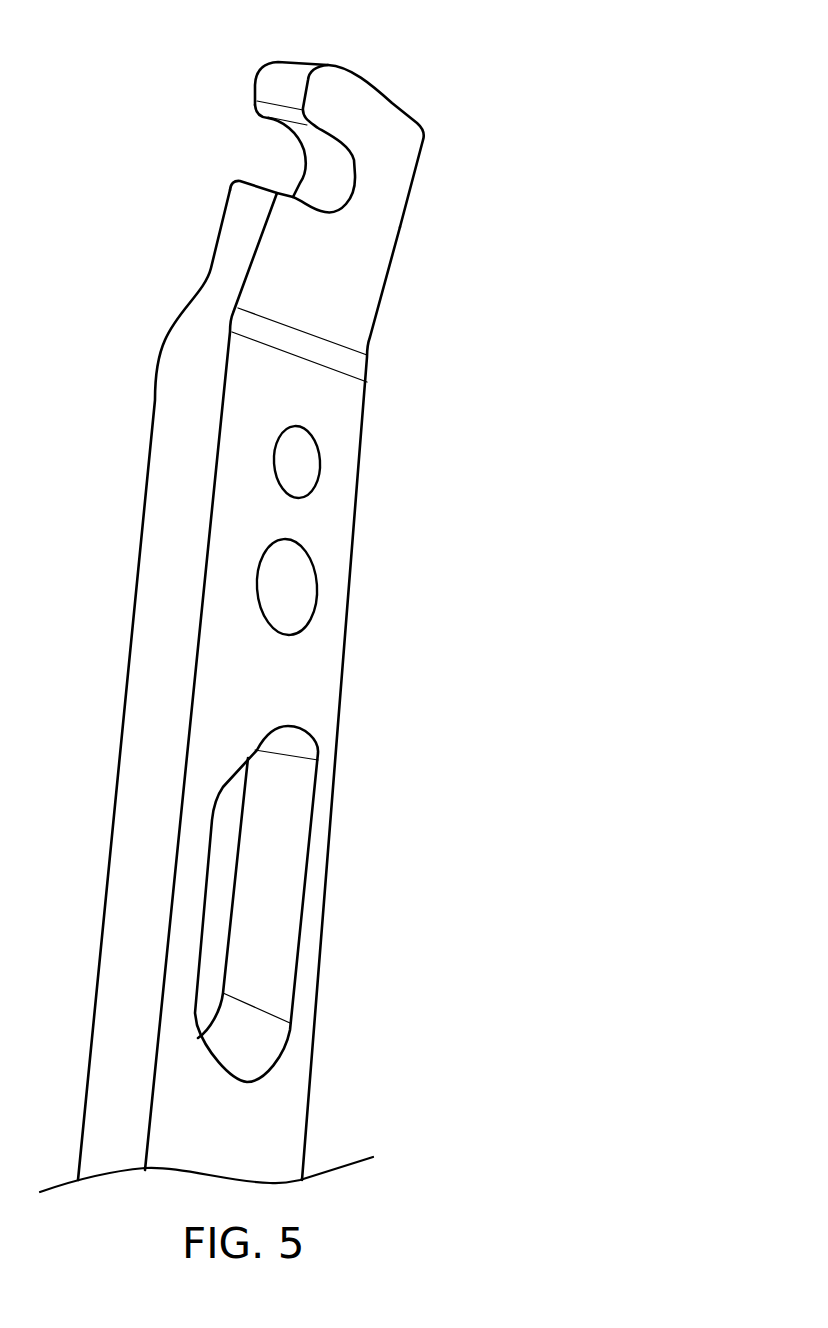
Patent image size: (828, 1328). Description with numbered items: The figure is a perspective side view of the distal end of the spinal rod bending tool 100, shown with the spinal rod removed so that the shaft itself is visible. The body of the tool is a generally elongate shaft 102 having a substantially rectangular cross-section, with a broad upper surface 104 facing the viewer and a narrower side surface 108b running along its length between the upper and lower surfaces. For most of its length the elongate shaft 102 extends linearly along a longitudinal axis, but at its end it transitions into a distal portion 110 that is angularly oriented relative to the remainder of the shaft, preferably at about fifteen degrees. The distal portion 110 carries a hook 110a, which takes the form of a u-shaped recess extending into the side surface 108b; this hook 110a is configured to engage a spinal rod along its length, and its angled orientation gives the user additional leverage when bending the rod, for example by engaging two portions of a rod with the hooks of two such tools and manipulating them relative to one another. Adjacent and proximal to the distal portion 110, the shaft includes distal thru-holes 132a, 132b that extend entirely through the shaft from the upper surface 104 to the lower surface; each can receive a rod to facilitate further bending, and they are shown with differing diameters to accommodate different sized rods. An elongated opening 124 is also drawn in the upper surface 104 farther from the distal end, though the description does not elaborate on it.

The spinal rod bending tool 100 is at (165, 61).
The elongate shaft 102 is at (175, 475).
The upper surface 104 is at (336, 688).
The side surface 108b is at (149, 731).
The distal portion 110 is at (395, 328).
The hook 110a is at (277, 88).
The elongated slot 124 is at (215, 932).
The distal thru-hole 132a is at (292, 467).
The distal thru-hole 132b is at (280, 595).